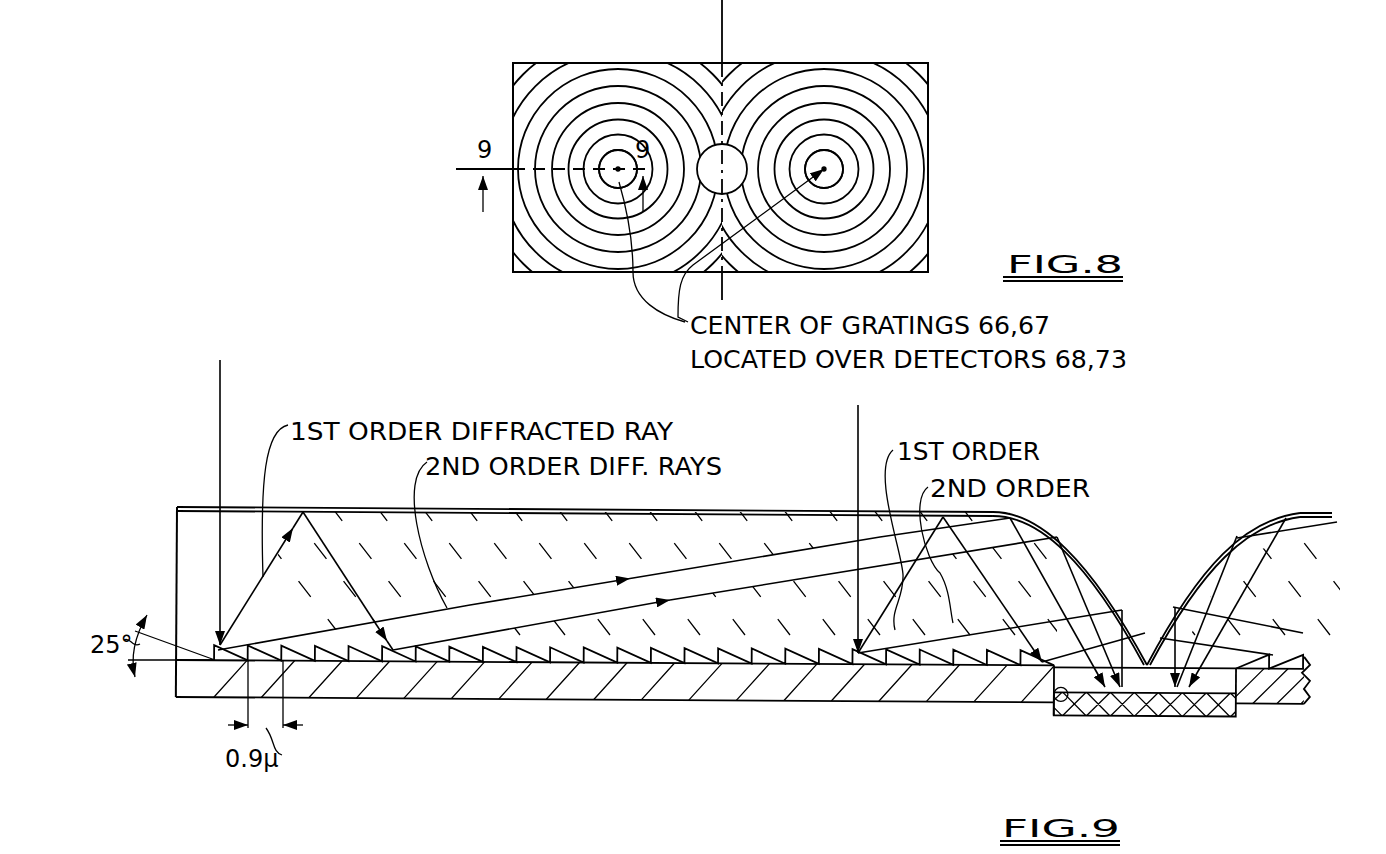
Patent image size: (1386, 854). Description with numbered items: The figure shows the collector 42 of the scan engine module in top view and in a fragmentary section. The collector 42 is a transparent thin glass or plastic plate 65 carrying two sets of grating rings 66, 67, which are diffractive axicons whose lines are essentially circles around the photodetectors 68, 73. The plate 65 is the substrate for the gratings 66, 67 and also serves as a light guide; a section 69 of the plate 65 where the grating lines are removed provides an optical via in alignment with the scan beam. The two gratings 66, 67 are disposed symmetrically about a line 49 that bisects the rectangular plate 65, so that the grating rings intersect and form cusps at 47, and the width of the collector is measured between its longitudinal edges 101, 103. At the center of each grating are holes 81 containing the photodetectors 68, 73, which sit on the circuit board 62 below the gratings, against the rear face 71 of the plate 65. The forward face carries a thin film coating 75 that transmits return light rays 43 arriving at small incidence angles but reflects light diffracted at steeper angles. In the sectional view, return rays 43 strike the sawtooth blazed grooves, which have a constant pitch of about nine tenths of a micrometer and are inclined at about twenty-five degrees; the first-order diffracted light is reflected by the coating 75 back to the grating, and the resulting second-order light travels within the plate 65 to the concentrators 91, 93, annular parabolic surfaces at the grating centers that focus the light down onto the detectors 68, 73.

In FIG. 8, the collector 42 is at (930, 135).
In FIG. 9, the collector 42 is at (538, 643).
In FIG. 9, the rays 43 is at (220, 380).
In FIG. 8, the cusps 47 is at (723, 260).
In FIG. 8, the line 49 is at (722, 85).
In FIG. 9, the circuit board 62 is at (680, 700).
In FIG. 9, the plate 65 is at (177, 593).
In FIG. 8, the grating rings 66 is at (875, 80).
In FIG. 8, the grating rings 67 is at (530, 218).
In FIG. 9, the grating rings 67 is at (408, 660).
In FIG. 8, the photodetector 68 is at (841, 169).
In FIG. 8, the section 69 is at (736, 152).
In FIG. 9, the back face 71 is at (470, 660).
In FIG. 8, the photodetector 73 is at (611, 183).
In FIG. 9, the photodetector 73 is at (1087, 715).
In FIG. 9, the coating 75 is at (730, 507).
In FIG. 9, the holes 81 is at (1055, 708).
In FIG. 8, the concentrator 91 is at (616, 150).
In FIG. 9, the concentrator 91 is at (1212, 553).
In FIG. 8, the concentrator 93 is at (824, 150).
In FIG. 8, the longitudinal edge 101 is at (550, 63).
In FIG. 8, the longitudinal edge 103 is at (547, 272).